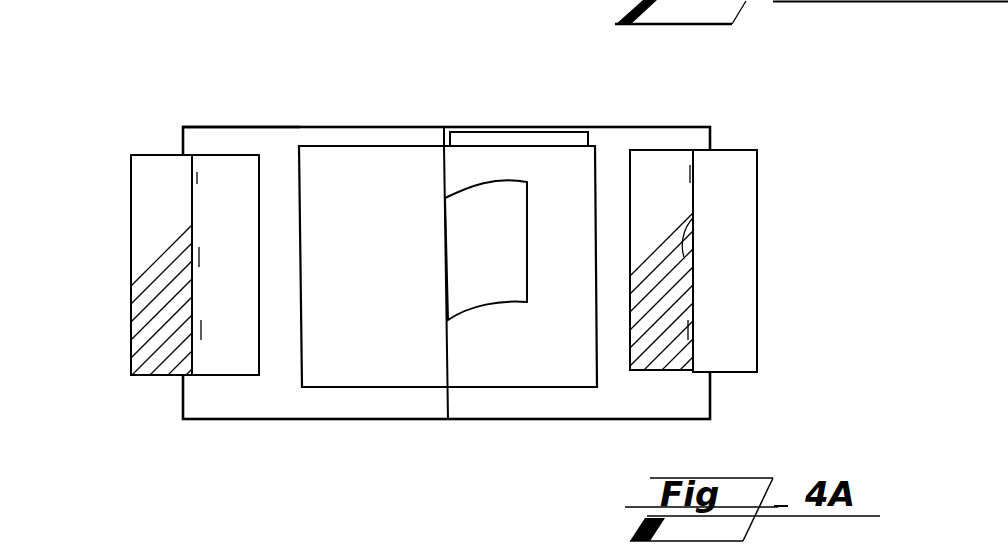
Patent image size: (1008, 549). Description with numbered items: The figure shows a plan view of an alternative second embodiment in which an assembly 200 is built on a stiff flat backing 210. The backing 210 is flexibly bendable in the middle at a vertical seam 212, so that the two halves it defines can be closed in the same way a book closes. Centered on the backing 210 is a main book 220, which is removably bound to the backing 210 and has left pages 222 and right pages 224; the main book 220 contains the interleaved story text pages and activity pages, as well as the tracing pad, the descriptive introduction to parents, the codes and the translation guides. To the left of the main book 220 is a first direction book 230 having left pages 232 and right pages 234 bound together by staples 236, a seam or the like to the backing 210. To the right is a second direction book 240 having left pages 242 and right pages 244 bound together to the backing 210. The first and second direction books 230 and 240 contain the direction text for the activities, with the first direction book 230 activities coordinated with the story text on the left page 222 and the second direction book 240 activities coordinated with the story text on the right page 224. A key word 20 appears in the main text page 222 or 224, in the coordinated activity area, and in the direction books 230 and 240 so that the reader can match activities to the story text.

The key word 20 is at (368, 328).
The assembly 200 is at (323, 112).
The stiff flat backing 210 is at (205, 126).
The vertical seam 212 is at (441, 137).
The main book 220 is at (523, 392).
The left pages 222 is at (320, 377).
The right pages 224 is at (582, 373).
The first direction book 230 is at (142, 148).
The left pages 232 is at (132, 235).
The right pages 234 is at (231, 375).
The staples 236 is at (197, 180).
The second direction book 240 is at (727, 148).
The left pages 242 is at (645, 371).
The right pages 244 is at (757, 320).